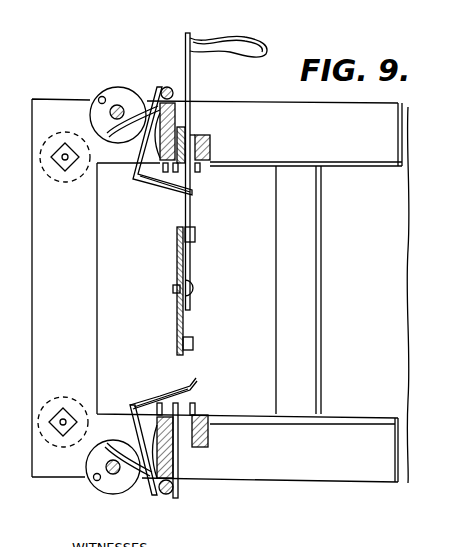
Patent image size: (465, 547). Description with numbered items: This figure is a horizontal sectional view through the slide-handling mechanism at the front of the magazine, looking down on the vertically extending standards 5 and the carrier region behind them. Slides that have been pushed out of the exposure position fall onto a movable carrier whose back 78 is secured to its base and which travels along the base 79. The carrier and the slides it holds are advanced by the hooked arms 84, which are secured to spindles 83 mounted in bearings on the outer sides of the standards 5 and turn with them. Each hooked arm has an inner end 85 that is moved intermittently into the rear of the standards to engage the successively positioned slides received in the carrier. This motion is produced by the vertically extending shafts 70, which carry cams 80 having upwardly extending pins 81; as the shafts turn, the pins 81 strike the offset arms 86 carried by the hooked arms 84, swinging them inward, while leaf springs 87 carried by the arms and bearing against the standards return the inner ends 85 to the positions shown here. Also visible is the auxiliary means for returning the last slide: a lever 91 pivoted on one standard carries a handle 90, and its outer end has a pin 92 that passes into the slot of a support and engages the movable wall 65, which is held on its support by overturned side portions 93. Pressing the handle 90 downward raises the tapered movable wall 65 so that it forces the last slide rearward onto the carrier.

The standards 5 is at (176, 124).
The movable wall 65 is at (196, 235).
The vertically extending shafts 70 is at (117, 105).
The back 78 is at (305, 279).
The base 79 is at (378, 407).
The cams 80 is at (90, 115).
The upwardly extending pins 81 is at (100, 97).
The spindles 83 is at (165, 496).
The hooked arms 84 is at (153, 291).
The inner ends 85 is at (164, 187).
The offset arms 86 is at (131, 111).
The leaf springs 87 is at (158, 145).
The handle 90 is at (255, 43).
The lever 91 is at (192, 123).
The pin 92 is at (194, 288).
The overturned side portions 93 is at (177, 228).